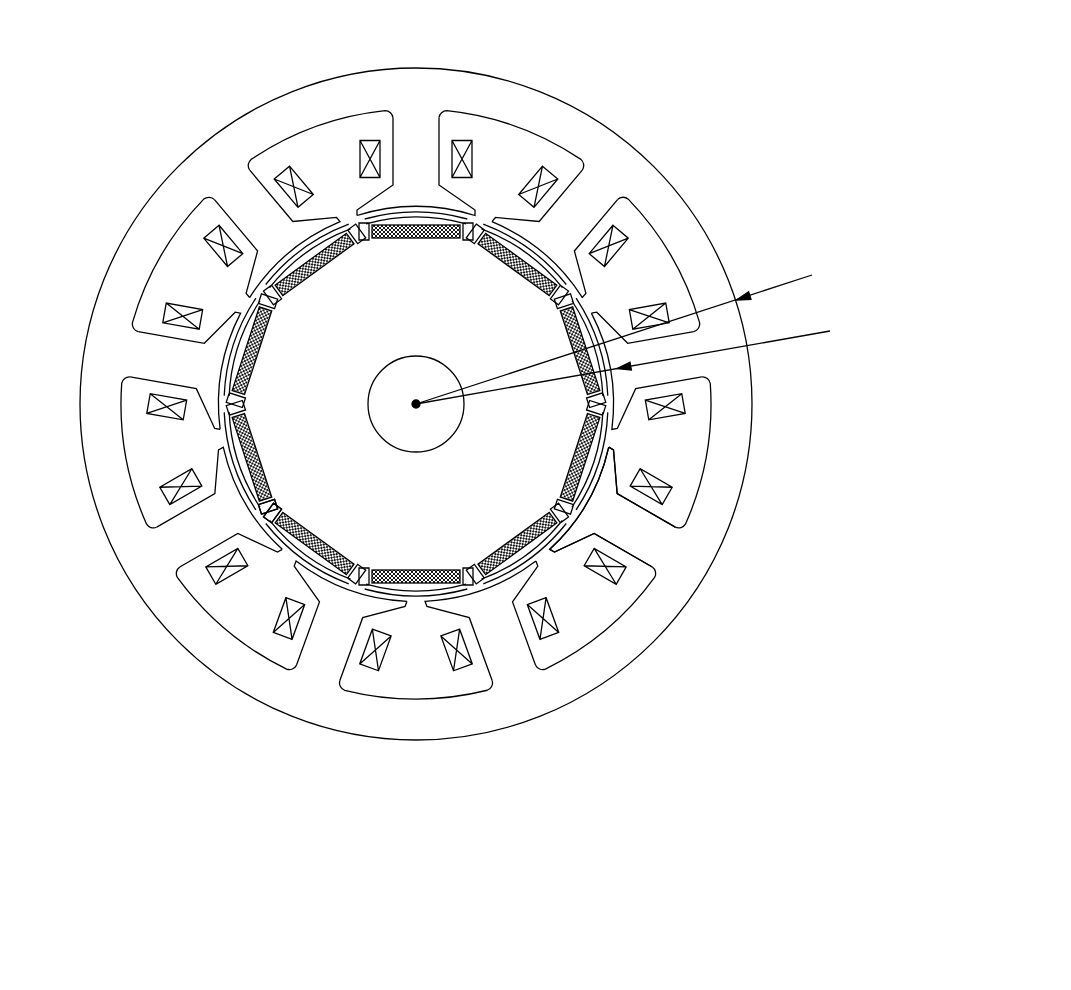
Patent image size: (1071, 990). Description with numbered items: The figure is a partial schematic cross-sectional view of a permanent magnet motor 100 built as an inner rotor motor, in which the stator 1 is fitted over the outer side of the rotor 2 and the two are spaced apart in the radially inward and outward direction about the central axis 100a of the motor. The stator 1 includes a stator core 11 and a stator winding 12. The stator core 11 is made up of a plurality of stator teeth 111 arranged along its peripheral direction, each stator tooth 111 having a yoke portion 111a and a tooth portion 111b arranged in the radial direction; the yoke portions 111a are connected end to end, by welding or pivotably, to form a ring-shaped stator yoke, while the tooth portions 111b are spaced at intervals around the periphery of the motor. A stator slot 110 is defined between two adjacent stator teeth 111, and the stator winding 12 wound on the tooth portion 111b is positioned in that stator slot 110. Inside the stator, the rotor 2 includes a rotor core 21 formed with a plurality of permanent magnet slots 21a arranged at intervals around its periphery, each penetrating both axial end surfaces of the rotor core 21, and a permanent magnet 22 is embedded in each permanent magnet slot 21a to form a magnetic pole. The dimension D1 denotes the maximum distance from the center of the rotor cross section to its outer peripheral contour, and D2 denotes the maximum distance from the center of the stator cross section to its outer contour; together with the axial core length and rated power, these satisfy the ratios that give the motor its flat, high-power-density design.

The permanent magnet motor 100 is at (643, 52).
The central axis 100a is at (612, 514).
The stator 1 is at (731, 147).
The stator core 11 is at (580, 203).
The stator winding 12 is at (593, 255).
The stator tooth 111 is at (88, 97).
The yoke portion 111a is at (207, 173).
The tooth portion 111b is at (267, 205).
The stator slot 110 is at (675, 457).
The rotor 2 is at (120, 648).
The rotor core 21 is at (387, 517).
The permanent magnet slot 21a is at (270, 505).
The permanent magnet 22 is at (350, 572).
The maximum rotor distance D1 is at (623, 361).
The maximum stator distance D2 is at (614, 331).